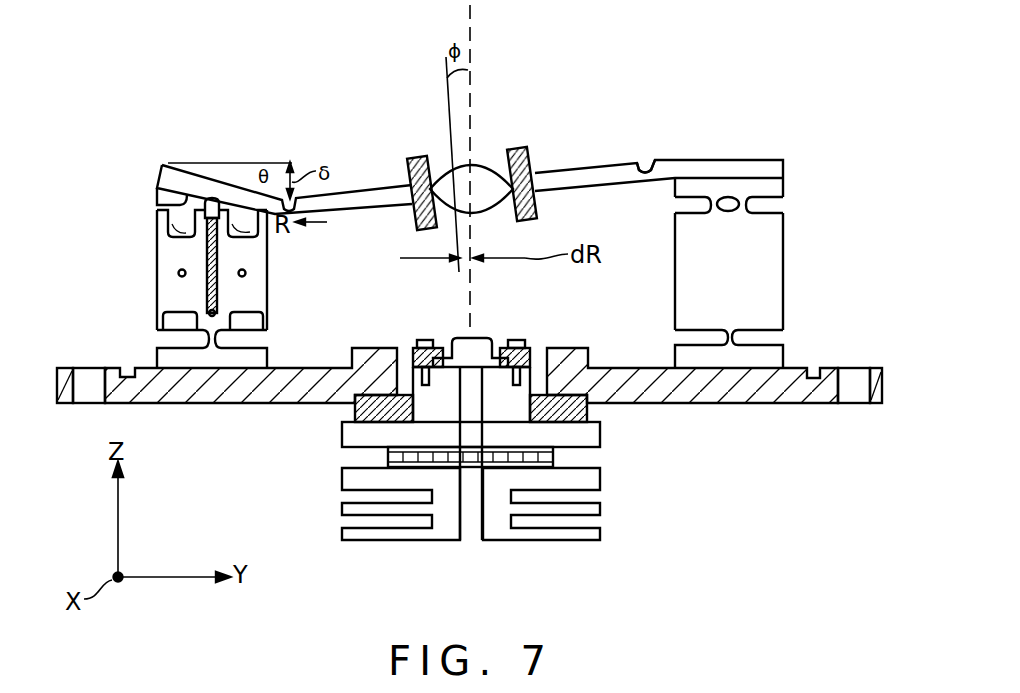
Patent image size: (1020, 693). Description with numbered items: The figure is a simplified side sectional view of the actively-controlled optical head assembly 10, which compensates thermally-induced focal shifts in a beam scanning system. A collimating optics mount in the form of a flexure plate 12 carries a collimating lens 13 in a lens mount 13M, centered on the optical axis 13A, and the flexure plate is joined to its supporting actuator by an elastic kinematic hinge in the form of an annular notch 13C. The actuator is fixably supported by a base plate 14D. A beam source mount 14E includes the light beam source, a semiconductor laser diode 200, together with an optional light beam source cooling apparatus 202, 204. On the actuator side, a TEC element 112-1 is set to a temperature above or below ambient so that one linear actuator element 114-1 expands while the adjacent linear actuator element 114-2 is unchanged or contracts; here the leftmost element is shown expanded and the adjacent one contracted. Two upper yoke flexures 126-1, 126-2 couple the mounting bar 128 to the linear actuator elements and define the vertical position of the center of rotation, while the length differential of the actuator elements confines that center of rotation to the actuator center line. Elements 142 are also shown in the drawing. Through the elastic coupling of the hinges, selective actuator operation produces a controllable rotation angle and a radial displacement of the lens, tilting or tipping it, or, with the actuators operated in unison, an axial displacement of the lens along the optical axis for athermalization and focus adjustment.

The optical head assembly 10 is at (878, 243).
The flexure plate 12 is at (752, 160).
The collimating lens 13 is at (483, 163).
The optical axis 13A is at (470, 12).
The annular notch 13C is at (648, 168).
The lens mount 13M is at (528, 155).
The base plate 14D is at (882, 387).
The beam source mount 14E is at (600, 431).
The TEC element 112-1 is at (220, 287).
The linear actuator element 114-1 is at (166, 258).
The linear actuator element 114-2 is at (255, 253).
The upper yoke flexure 126-1 is at (193, 212).
The upper yoke flexure 126-2 is at (240, 240).
The mounting bar 128 is at (158, 192).
The flexure pedestal 142 is at (158, 359).
The semiconductor laser diode 200 is at (482, 339).
The light beam source cooling apparatus 202 is at (553, 460).
The light beam source cooling apparatus 204 is at (600, 505).